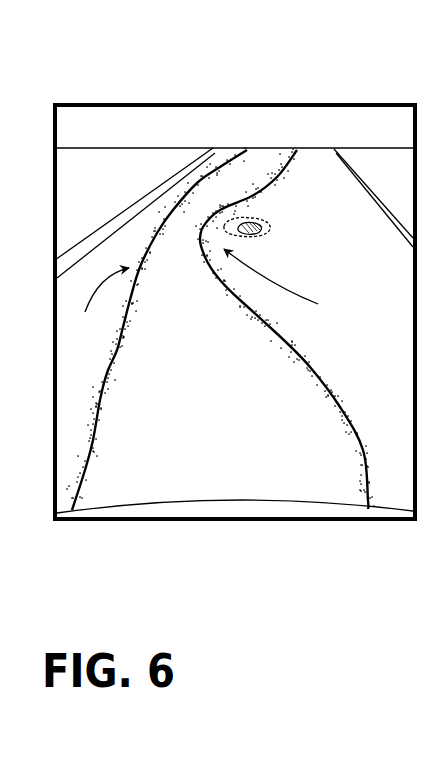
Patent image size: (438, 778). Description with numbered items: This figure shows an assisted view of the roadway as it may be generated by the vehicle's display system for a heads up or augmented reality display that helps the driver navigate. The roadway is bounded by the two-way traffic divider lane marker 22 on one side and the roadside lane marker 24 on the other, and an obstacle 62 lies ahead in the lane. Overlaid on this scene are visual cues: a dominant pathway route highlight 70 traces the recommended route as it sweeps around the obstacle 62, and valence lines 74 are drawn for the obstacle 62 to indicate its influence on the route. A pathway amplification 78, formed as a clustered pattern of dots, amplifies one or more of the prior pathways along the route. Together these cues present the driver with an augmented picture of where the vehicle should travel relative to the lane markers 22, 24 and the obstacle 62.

The two-way traffic divider lane marker 22 is at (363, 177).
The roadside lane marker 24 is at (142, 202).
The obstacle 62 is at (260, 222).
The dominant pathway route highlight 70 is at (235, 300).
The valence lines 74 is at (290, 288).
The pathway amplification 78 is at (97, 305).